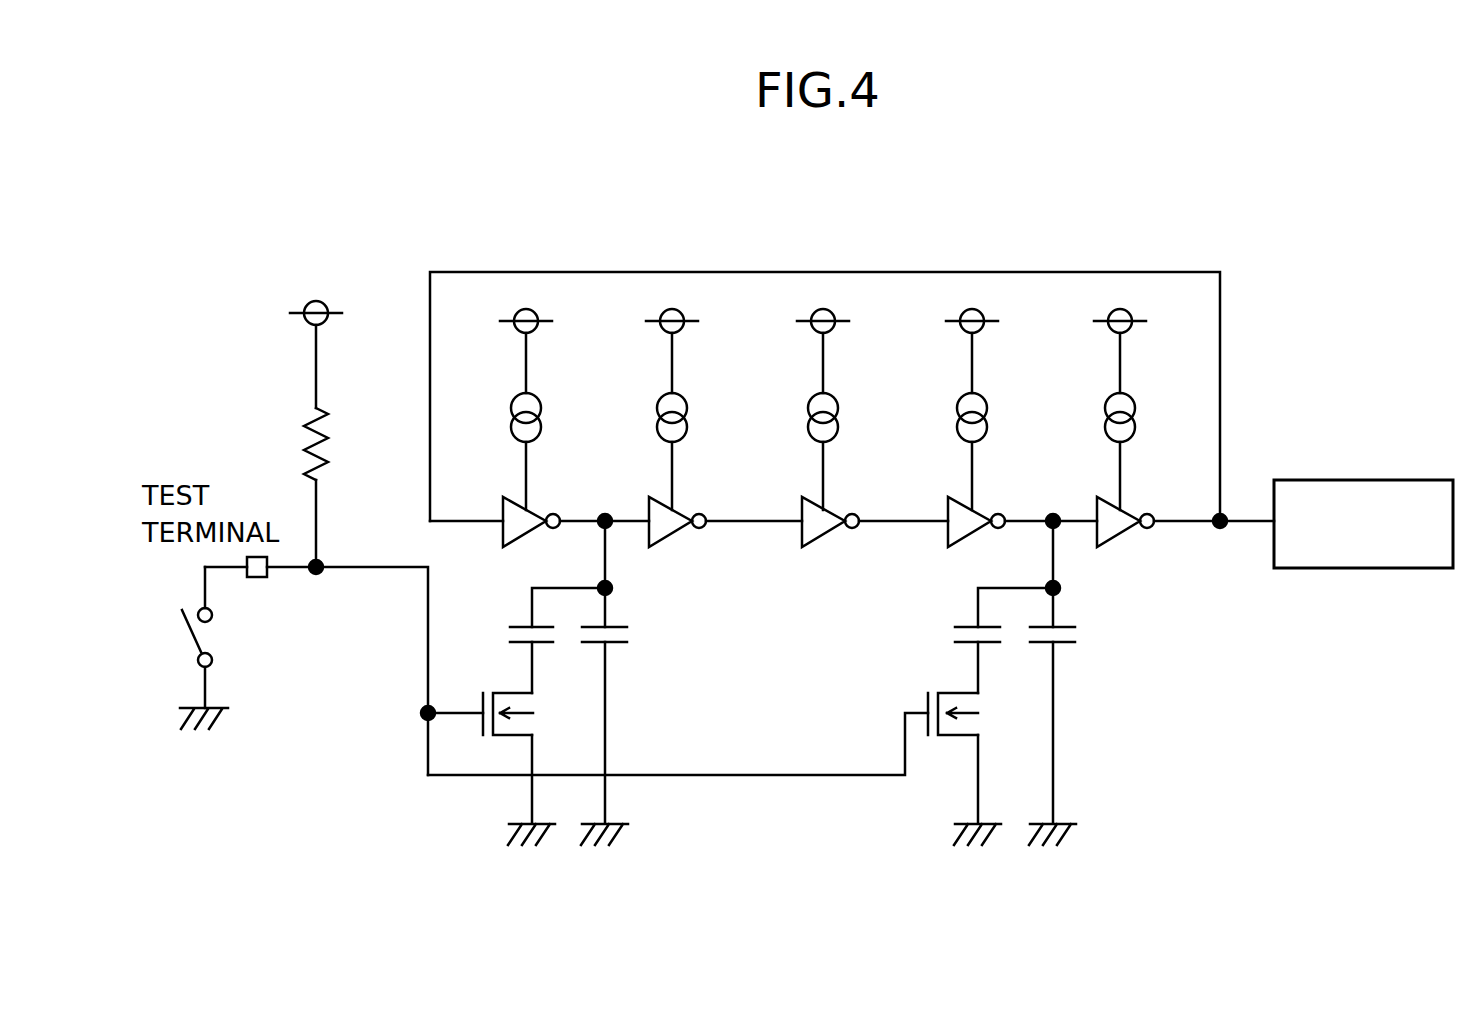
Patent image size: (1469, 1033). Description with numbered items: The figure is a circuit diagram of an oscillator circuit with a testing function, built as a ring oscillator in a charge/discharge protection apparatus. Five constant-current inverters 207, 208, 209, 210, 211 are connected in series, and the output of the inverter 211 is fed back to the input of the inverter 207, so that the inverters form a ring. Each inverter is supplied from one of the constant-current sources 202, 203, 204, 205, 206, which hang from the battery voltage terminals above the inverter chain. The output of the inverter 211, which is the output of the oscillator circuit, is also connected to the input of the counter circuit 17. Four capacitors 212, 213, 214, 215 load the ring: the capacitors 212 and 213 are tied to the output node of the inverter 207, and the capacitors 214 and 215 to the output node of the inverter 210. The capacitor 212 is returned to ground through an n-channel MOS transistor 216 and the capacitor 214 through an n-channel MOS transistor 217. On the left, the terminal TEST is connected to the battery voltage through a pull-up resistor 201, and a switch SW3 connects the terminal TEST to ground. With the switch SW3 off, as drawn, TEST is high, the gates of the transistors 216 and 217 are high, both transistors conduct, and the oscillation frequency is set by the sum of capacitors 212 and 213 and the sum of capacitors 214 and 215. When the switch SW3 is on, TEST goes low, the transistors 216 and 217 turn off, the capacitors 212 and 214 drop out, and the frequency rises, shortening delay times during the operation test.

The counter circuit 17 is at (1380, 480).
The pull-up resistor 201 is at (346, 444).
The constant-current source 202 is at (556, 417).
The constant-current source 203 is at (703, 417).
The constant-current source 204 is at (856, 417).
The constant-current source 205 is at (1004, 417).
The constant-current source 206 is at (1152, 417).
The constant-current inverter 207 is at (551, 533).
The constant-current inverter 208 is at (693, 533).
The constant-current inverter 209 is at (845, 533).
The constant-current inverter 210 is at (993, 533).
The constant-current inverter 211 is at (1140, 533).
The capacitor 212 is at (500, 635).
The capacitor 213 is at (638, 635).
The capacitor 214 is at (947, 635).
The capacitor 215 is at (1087, 635).
The n-channel MOS transistor 216 is at (539, 714).
The n-channel MOS transistor 217 is at (985, 714).
The switch SW3 is at (232, 637).